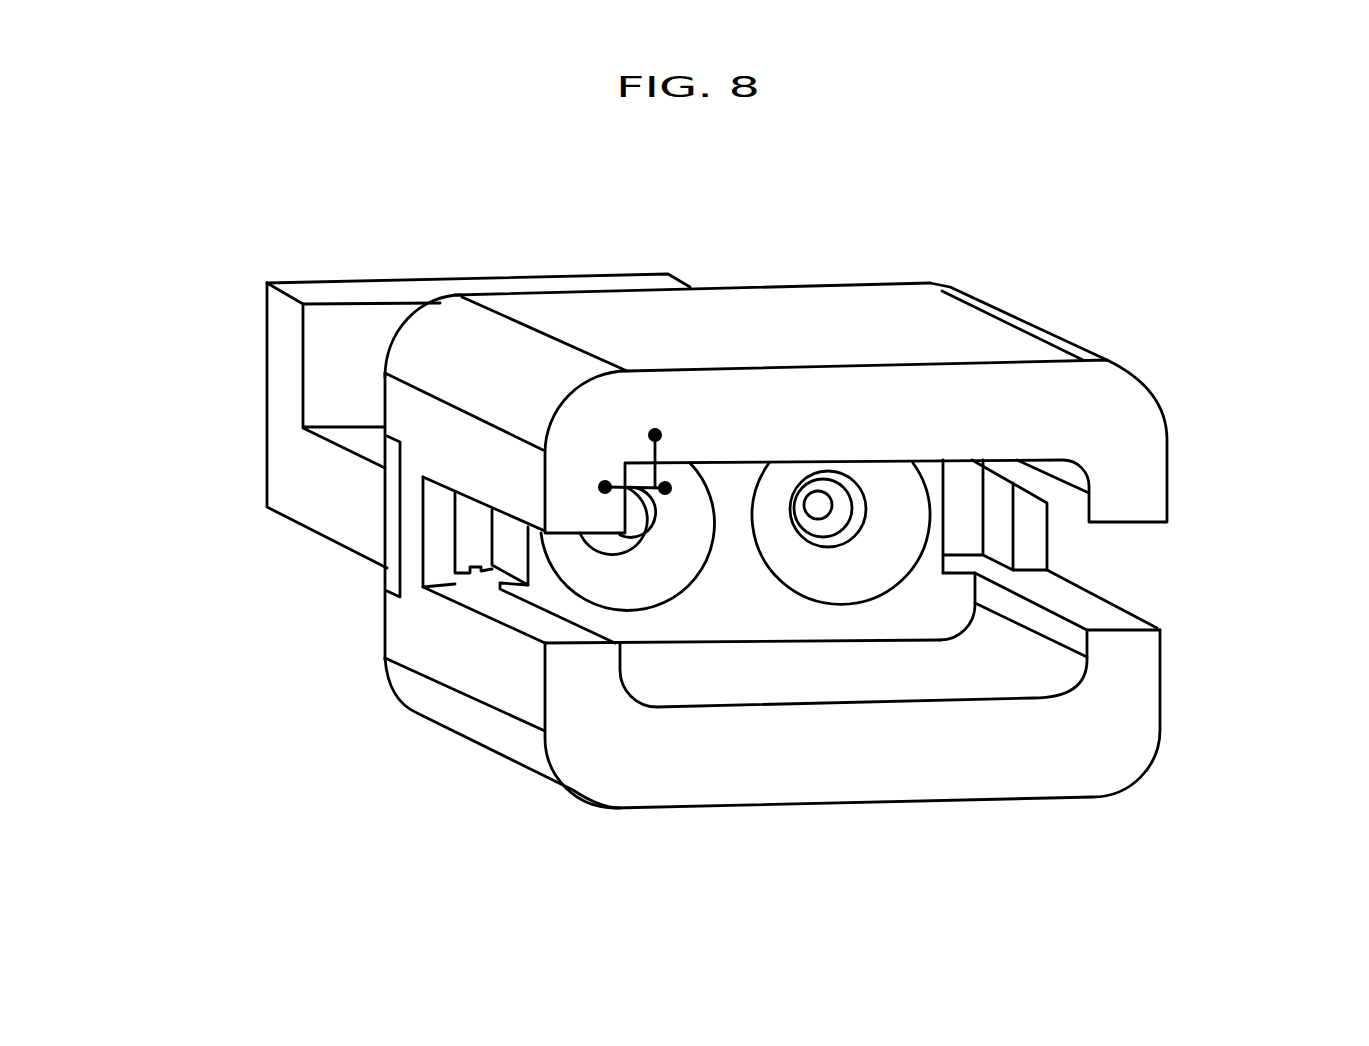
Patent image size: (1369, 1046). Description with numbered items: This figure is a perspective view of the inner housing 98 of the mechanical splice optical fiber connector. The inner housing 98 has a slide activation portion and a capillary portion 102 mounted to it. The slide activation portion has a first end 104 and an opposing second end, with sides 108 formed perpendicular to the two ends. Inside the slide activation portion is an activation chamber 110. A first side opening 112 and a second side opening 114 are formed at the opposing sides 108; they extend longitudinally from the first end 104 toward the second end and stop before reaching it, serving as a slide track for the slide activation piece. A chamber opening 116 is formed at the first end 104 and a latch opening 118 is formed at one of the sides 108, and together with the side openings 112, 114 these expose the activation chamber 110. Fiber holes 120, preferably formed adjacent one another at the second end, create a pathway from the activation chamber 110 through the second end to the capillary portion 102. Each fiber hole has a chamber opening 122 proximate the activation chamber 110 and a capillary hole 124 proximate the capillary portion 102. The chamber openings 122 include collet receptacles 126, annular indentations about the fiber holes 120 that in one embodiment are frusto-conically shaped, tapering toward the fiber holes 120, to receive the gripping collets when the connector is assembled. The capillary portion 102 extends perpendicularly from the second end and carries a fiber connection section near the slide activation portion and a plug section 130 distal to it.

The inner housing 98 is at (1042, 238).
The capillary portion 102 is at (300, 468).
The first end 104 is at (1107, 427).
The sides 108 is at (783, 327).
The activation chamber 110 is at (870, 673).
The first side opening 112 is at (1128, 573).
The second side opening 114 is at (512, 603).
The chamber opening 116 is at (957, 677).
The latch opening 118 is at (385, 521).
The fiber holes 120 is at (815, 503).
The chamber openings 122 is at (947, 460).
The capillary holes 124 is at (864, 493).
The collet receptacles 126 is at (833, 570).
The plug section 130 is at (357, 290).